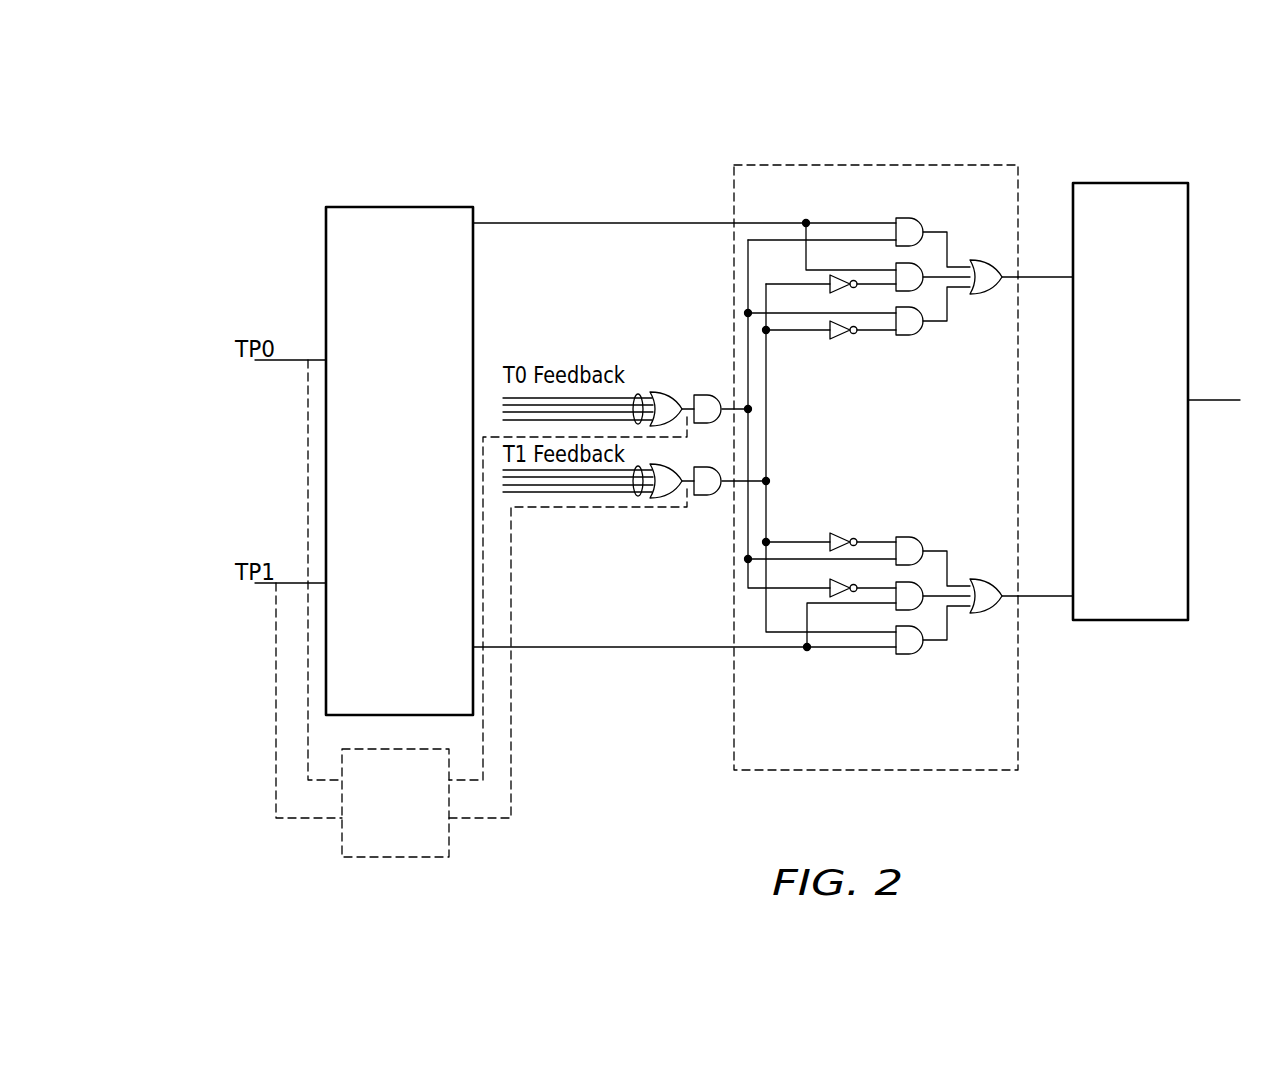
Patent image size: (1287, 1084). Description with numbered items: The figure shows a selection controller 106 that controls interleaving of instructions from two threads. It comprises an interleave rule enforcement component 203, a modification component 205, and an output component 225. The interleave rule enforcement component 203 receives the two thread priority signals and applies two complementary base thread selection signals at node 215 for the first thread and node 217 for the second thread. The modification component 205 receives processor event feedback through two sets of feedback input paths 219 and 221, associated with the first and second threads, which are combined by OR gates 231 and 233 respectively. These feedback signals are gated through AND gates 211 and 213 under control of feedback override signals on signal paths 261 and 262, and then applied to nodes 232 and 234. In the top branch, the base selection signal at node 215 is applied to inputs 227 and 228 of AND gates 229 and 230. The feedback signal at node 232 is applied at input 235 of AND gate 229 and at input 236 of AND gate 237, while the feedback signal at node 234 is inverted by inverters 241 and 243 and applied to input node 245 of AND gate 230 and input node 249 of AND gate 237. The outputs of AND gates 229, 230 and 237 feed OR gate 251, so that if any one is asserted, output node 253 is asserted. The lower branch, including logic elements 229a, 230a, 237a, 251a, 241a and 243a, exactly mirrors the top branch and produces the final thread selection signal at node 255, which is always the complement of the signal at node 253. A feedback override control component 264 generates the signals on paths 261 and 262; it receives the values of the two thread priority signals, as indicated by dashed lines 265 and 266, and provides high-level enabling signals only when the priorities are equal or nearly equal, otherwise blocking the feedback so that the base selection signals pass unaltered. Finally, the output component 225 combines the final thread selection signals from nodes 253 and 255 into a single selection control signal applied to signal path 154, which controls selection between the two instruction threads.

The selection controller 106 is at (278, 204).
The interleave rule enforcement component 203 is at (383, 541).
The modification component 205 is at (786, 762).
The output component 225 is at (1113, 454).
The signal path 154 is at (1201, 399).
The AND gate 211 is at (700, 396).
The AND gate 213 is at (704, 495).
The feedback input paths 219 is at (638, 394).
The feedback input paths 221 is at (638, 496).
The OR gate 231 is at (670, 392).
The OR gate 233 is at (660, 498).
The node 215 is at (634, 222).
The node 217 is at (645, 650).
The input 227 is at (893, 221).
The input 228 is at (903, 263).
The AND gate 229 is at (910, 218).
The AND gate 230 is at (947, 268).
The node 232 is at (751, 407).
The node 234 is at (768, 479).
The input 235 is at (896, 267).
The input 236 is at (903, 308).
The AND gate 237 is at (908, 336).
The inverter 241 is at (828, 281).
The inverter 243 is at (828, 337).
The input node 245 is at (896, 313).
The input node 249 is at (896, 334).
The OR gate 251 is at (973, 294).
The output node 253 is at (1018, 274).
The node 255 is at (1018, 593).
The AND gate 229a is at (905, 655).
The OR gate 230a is at (947, 585).
The AND gate 237a is at (912, 536).
The inverter 241a is at (829, 583).
The inverter 243a is at (829, 537).
The logic element 251a is at (975, 613).
The signal path 261 is at (484, 627).
The signal path 262 is at (512, 597).
The feedback override control component 264 is at (350, 857).
The dashed line 265 is at (308, 646).
The dashed line 266 is at (276, 695).